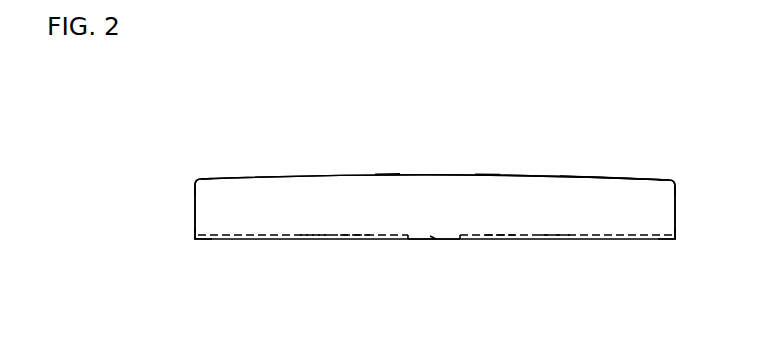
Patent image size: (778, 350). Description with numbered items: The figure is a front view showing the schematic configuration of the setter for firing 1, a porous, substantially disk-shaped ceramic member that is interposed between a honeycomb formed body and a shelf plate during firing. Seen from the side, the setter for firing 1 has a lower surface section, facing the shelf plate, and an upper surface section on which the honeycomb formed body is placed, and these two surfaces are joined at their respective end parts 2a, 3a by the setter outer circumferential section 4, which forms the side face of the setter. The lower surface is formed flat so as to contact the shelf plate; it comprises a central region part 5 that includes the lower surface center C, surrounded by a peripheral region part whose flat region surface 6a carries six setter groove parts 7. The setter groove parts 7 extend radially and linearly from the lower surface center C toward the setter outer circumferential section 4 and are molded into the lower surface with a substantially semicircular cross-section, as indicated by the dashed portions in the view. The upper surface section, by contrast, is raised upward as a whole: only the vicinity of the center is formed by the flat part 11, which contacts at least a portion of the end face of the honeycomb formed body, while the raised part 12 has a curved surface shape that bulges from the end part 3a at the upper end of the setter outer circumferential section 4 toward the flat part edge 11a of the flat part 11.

The setter for firing 1 is at (291, 142).
The end part of the setter lower surface section 2a is at (195, 239).
The end part of the setter upper surface section 3a is at (195, 185).
The setter outer circumferential section 4 is at (195, 213).
The central region part 5 is at (421, 240).
The region surface 6a is at (232, 240).
The setter groove part 7 is at (315, 240).
The flat part 11 is at (449, 173).
The flat part edge 11a is at (388, 172).
The raised part 12 is at (604, 176).
The lower surface center C is at (432, 240).